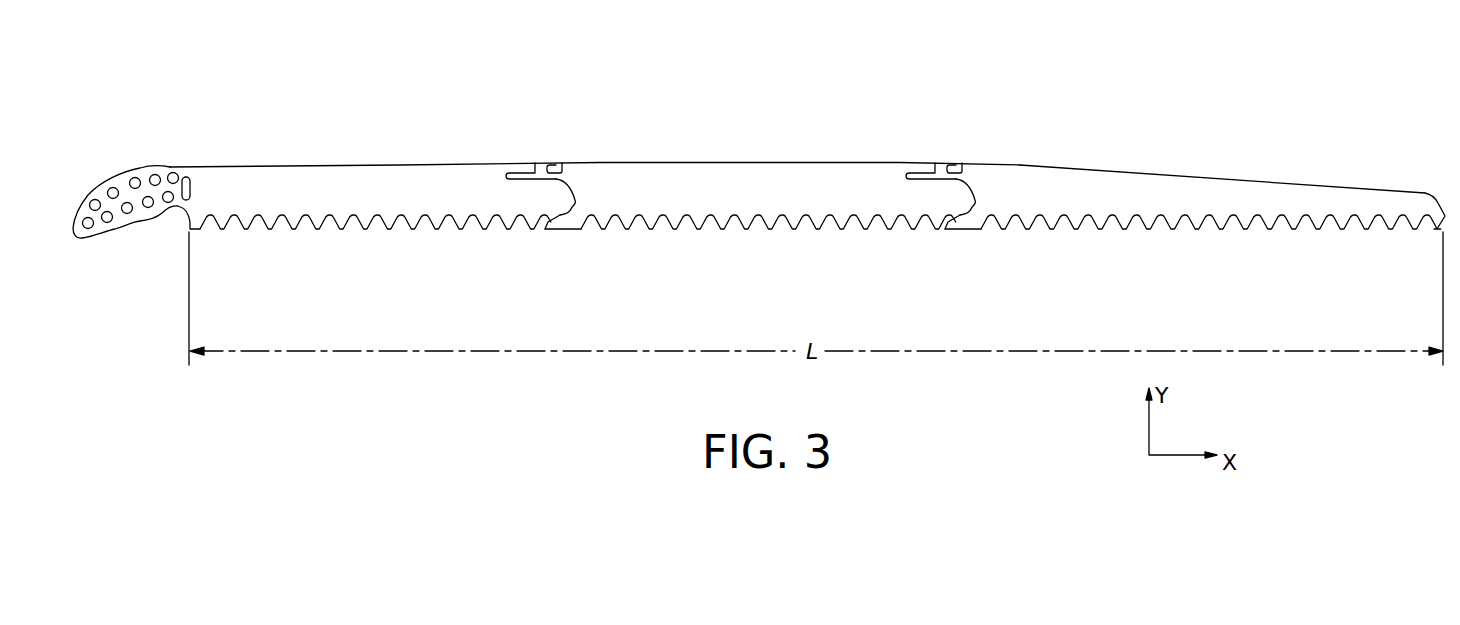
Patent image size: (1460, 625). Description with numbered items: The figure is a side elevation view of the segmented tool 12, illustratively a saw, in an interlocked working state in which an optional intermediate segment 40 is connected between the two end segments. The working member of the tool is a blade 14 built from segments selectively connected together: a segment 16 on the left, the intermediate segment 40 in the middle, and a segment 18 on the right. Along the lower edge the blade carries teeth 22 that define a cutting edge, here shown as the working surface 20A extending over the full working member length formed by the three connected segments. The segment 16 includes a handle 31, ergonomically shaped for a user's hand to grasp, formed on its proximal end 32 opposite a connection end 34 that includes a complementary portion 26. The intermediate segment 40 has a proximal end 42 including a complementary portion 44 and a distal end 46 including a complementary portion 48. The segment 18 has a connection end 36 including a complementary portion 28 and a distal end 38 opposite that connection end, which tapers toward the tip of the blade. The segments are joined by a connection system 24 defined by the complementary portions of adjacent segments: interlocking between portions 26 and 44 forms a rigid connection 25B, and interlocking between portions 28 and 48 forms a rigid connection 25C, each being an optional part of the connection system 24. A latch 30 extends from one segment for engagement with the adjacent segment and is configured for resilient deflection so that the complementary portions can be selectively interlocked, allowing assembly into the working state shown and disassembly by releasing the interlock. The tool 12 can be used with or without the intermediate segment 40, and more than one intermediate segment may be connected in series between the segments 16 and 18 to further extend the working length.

The segmented tool 12 is at (1325, 92).
The blade 14 is at (1110, 118).
The segment 16 is at (367, 172).
The segment 18 is at (1167, 188).
The working surface 20A is at (733, 284).
The teeth 22 is at (458, 229).
The connection system 24 is at (562, 75).
The rigid connection 25B is at (562, 142).
The rigid connection 25C is at (972, 137).
The complementary portion 26 is at (520, 138).
The complementary portion 28 is at (992, 148).
The latch 30 is at (532, 162).
The handle 31 is at (118, 160).
The proximal end 32 is at (86, 135).
The connection end 34 is at (527, 252).
The connection end 36 is at (962, 252).
The distal end 38 is at (1438, 178).
The intermediate segment 40 is at (762, 172).
The proximal end 42 is at (558, 248).
The complementary portion 44 is at (600, 150).
The distal end 46 is at (927, 250).
The complementary portion 48 is at (922, 145).